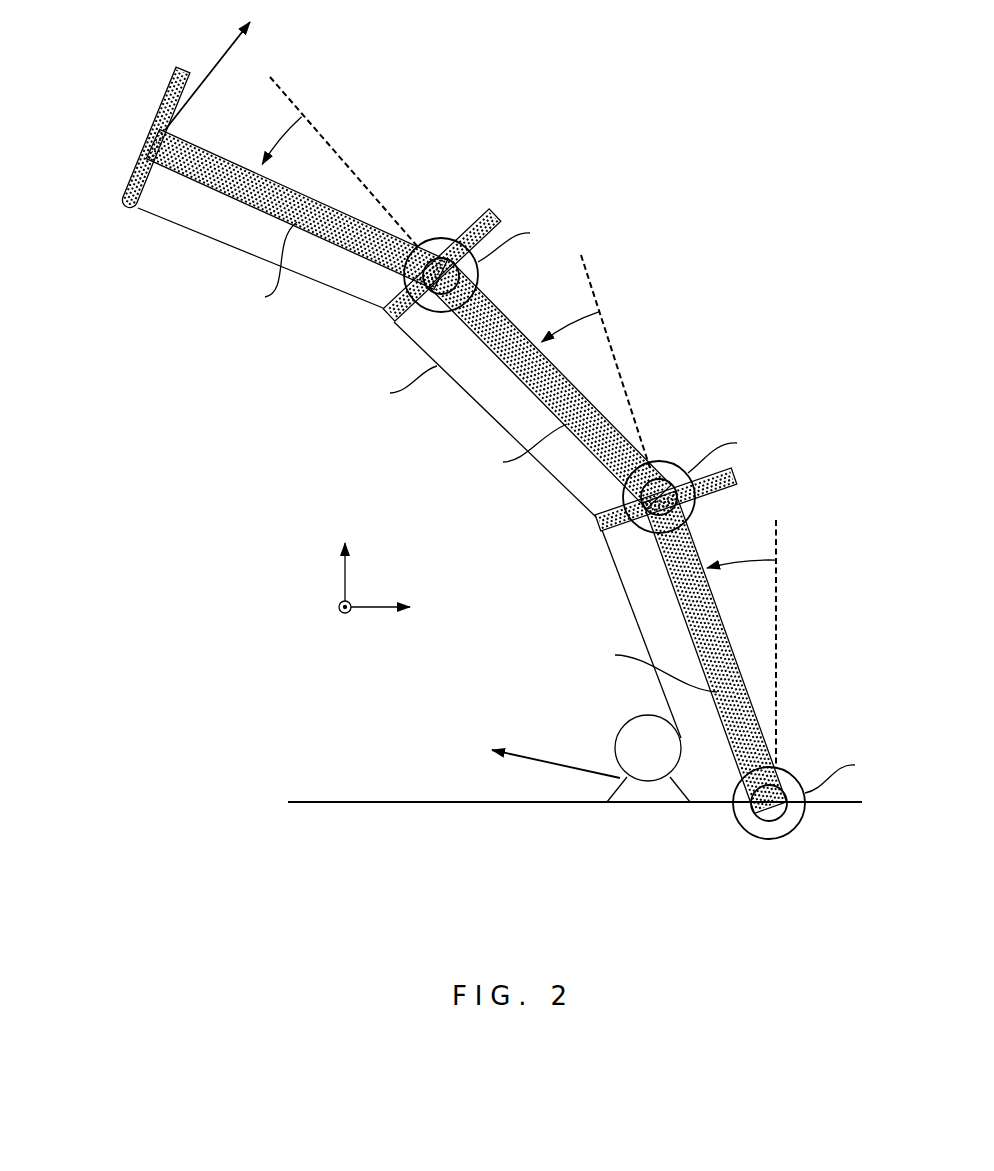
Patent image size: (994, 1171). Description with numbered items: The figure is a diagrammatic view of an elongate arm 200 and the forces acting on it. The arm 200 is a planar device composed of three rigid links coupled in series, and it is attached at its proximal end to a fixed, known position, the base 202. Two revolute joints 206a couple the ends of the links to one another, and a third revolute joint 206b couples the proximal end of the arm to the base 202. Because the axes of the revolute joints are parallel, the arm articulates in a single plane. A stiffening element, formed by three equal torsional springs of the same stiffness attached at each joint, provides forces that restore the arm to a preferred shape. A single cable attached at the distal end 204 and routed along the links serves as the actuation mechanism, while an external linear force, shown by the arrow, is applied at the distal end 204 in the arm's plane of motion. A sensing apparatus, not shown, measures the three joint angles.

The elongate arm 200 is at (672, 312).
The base 202 is at (688, 897).
The distal end 204 is at (150, 137).
The revolute joints 206a is at (484, 162).
The third revolute joint 206b is at (790, 860).